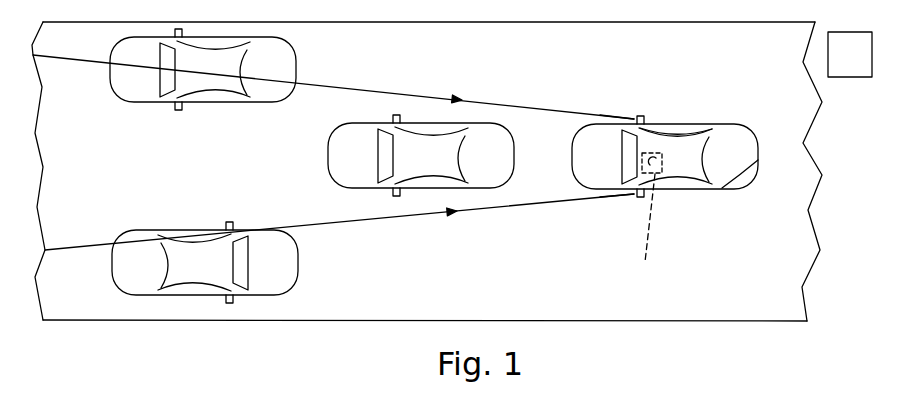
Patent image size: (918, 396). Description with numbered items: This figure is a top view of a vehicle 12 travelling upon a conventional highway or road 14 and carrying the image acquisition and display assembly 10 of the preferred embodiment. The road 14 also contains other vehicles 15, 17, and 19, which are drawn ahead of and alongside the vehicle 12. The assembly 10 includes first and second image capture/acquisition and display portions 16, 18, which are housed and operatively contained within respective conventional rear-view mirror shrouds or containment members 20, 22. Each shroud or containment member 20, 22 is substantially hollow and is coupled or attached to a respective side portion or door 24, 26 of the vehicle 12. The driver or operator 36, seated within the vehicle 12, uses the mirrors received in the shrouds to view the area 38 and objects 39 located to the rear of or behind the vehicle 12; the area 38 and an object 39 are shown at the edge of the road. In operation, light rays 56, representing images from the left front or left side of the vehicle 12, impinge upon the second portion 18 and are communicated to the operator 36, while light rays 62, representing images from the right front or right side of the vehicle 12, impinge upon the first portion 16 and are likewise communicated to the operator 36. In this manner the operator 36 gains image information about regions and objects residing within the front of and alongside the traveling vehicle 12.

The image acquisition and display assembly 10 is at (681, 148).
The vehicle 12 is at (740, 190).
The highway or road 14 is at (504, 271).
The other vehicle 15 is at (328, 153).
The first image capture/acquisition and display portion 16 is at (616, 102).
The other vehicle 17 is at (297, 56).
The second image capture/acquisition and display portion 18 is at (616, 206).
The other vehicle 19 is at (292, 284).
The rear-view mirror shroud or containment member 20 is at (640, 117).
The rear-view mirror shroud or containment member 22 is at (637, 197).
The side portion or door 24 is at (665, 120).
The side portion or door 26 is at (672, 175).
The driver or operator 36 is at (645, 231).
The area 38 is at (851, 152).
The object 39 is at (866, 68).
The light rays 56 is at (340, 225).
The light rays 62 is at (417, 96).